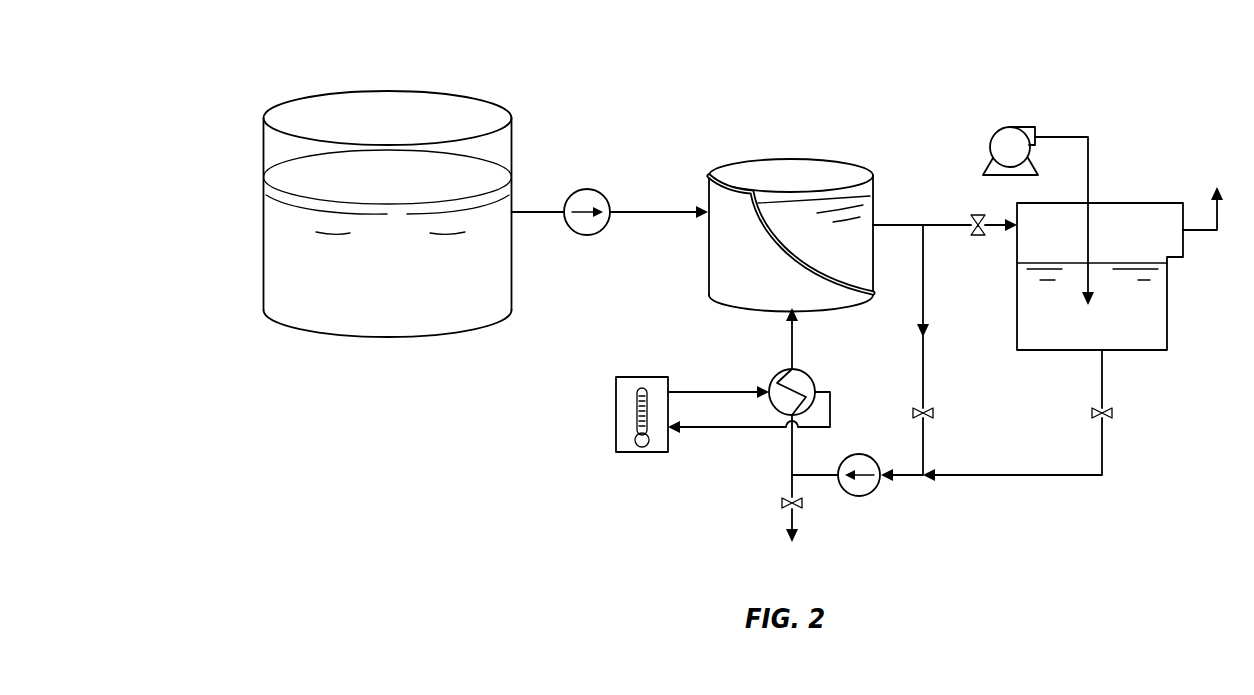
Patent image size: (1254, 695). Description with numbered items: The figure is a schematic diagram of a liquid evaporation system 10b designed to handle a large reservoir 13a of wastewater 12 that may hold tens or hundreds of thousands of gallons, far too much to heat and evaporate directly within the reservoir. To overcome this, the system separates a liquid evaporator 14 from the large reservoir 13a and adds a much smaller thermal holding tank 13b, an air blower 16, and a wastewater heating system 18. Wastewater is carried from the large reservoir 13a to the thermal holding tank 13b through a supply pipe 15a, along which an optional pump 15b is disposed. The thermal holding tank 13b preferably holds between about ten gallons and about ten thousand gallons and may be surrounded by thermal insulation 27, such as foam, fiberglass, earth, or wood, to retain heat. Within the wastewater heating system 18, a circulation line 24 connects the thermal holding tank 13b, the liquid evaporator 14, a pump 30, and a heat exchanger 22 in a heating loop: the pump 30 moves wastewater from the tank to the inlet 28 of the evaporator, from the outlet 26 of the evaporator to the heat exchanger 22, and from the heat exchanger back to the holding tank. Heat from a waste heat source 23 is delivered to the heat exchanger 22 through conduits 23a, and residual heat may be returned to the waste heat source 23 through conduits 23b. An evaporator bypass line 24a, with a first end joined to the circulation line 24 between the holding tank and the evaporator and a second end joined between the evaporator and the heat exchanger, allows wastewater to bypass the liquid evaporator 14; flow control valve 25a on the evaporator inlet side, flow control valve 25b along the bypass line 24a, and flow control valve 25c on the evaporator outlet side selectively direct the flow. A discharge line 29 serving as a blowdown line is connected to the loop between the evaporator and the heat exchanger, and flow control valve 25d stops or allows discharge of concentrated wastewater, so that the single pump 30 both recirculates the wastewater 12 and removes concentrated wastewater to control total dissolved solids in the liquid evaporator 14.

The liquid evaporation system 10b is at (935, 55).
The wastewater 12 is at (495, 208).
The large reservoir 13a is at (500, 142).
The thermal holding tank 13b is at (815, 160).
The liquid evaporator 14 is at (1121, 203).
The supply pipe 15a is at (646, 210).
The pump 15b is at (587, 235).
The air blower 16 is at (1010, 127).
The wastewater heating system 18 is at (1089, 492).
The heat exchanger 22 is at (804, 373).
The waste heat source 23 is at (622, 453).
The conduits 23a is at (720, 390).
The conduits 23b is at (720, 438).
The circulation line 24 is at (1104, 443).
The evaporator bypass line 24a is at (925, 443).
The flow control valve 25a is at (978, 213).
The flow control valve 25b is at (933, 413).
The flow control valve 25c is at (1113, 413).
The flow control valve 25d is at (782, 503).
The outlet 26 is at (1100, 352).
The thermal insulation 27 is at (789, 262).
The inlet 28 is at (1015, 232).
The discharge line 29 is at (795, 520).
The pump 30 is at (855, 455).